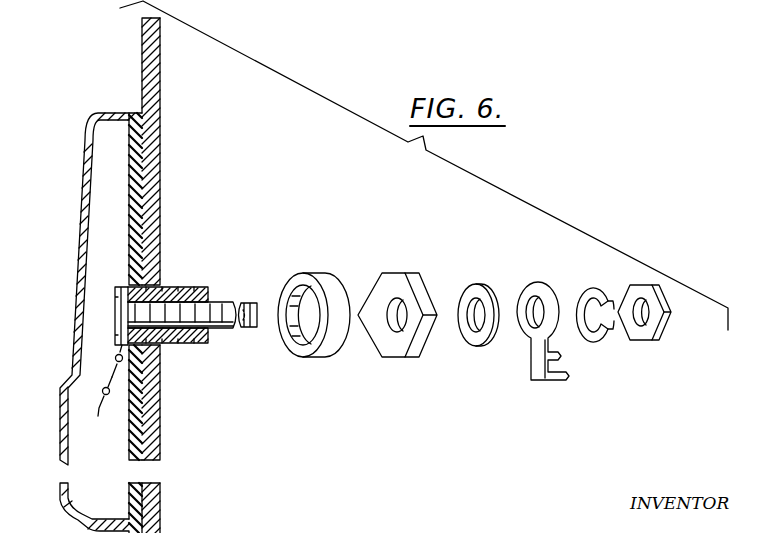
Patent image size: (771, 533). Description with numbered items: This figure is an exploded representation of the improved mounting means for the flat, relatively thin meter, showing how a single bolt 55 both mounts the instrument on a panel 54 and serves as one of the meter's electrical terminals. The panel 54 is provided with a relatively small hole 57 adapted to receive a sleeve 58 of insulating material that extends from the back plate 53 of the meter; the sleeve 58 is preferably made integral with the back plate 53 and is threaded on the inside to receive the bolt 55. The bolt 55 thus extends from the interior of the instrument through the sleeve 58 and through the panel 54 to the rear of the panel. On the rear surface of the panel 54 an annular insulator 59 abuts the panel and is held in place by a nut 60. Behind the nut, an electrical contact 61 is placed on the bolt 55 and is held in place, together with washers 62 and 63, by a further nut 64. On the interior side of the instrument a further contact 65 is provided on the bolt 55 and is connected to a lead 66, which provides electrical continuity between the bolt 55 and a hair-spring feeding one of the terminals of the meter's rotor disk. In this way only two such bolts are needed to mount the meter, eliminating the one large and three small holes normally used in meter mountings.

The back plate 53 is at (142, 216).
The panel 54 is at (148, 176).
The bolt 55 is at (232, 332).
The hole 57 is at (160, 285).
The sleeve 58 is at (207, 290).
The annular insulator 59 is at (327, 280).
The nut 60 is at (412, 283).
The electrical contact 61 is at (540, 297).
The washer 62 is at (482, 293).
The washer 63 is at (603, 293).
The further nut 64 is at (655, 328).
The further contact 65 is at (118, 347).
The lead 66 is at (98, 416).